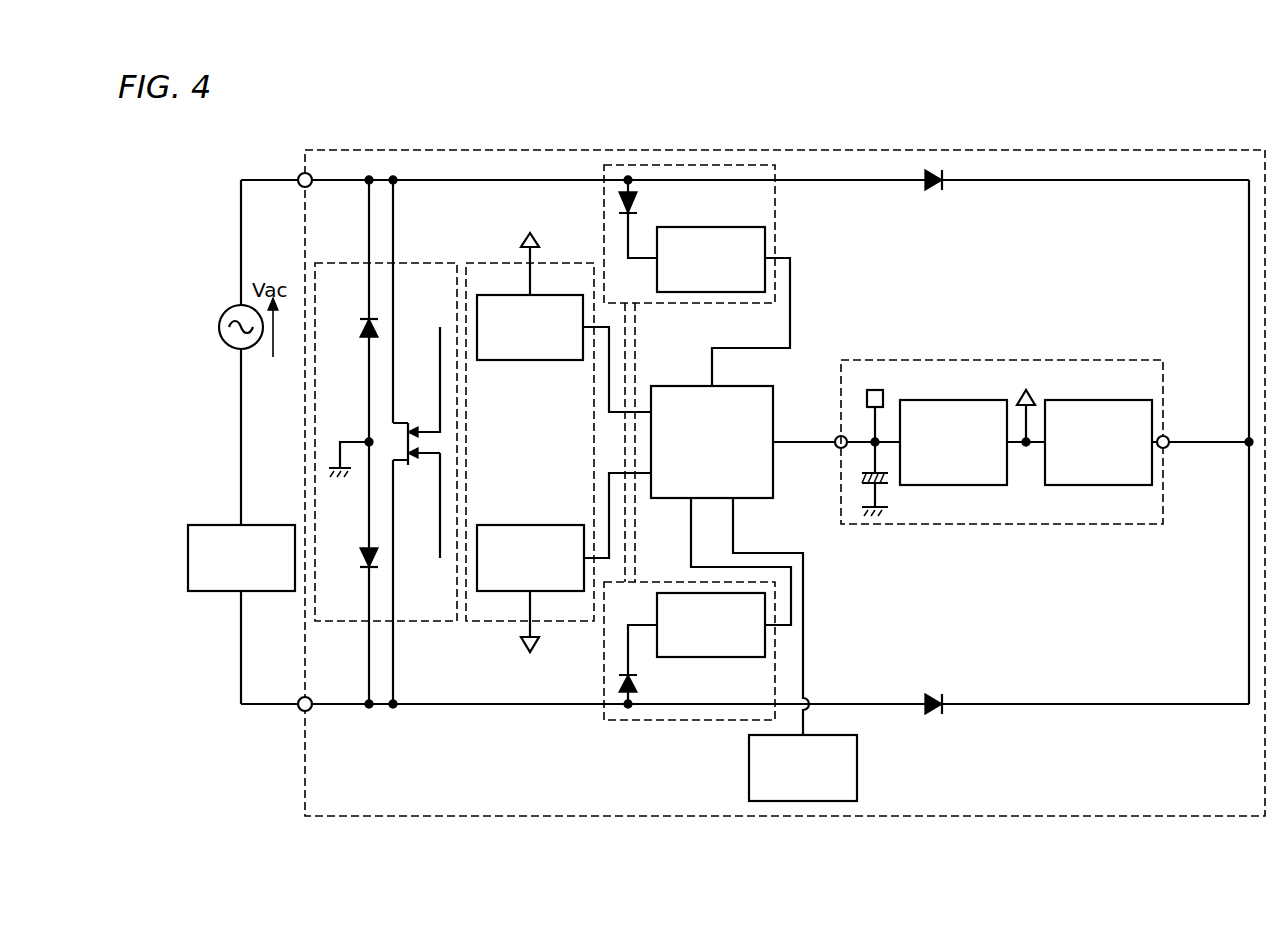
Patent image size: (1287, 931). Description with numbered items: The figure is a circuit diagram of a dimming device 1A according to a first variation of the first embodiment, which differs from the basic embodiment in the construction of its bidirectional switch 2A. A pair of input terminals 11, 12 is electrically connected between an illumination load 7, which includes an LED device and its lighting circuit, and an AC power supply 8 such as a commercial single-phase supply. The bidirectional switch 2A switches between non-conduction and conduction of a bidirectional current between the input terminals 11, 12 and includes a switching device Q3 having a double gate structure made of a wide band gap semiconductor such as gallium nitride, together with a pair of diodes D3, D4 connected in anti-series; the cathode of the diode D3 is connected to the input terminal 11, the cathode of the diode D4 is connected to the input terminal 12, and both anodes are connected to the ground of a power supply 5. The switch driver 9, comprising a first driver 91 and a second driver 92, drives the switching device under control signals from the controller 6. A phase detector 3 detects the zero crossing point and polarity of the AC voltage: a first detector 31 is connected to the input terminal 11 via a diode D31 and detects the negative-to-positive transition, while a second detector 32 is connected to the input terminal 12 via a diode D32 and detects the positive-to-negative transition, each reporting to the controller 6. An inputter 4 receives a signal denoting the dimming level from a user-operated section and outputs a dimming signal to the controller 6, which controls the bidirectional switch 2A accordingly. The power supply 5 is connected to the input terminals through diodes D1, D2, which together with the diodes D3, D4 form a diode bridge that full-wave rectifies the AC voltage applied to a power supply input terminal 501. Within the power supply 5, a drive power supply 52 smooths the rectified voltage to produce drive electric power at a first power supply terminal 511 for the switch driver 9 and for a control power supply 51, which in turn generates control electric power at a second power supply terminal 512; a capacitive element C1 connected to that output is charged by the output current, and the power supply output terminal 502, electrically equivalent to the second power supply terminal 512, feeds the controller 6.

The dimming device 1A is at (1232, 146).
The input terminal 11 is at (299, 176).
The input terminal 12 is at (299, 711).
The bidirectional switch 2A is at (340, 263).
The phase detector 3 is at (776, 210).
The first detector 31 is at (728, 227).
The second detector 32 is at (727, 661).
The inputter 4 is at (857, 768).
The power supply 5 is at (1017, 360).
The control power supply 51 is at (954, 485).
The drive power supply 52 is at (1100, 485).
The power supply input terminal 501 is at (1170, 436).
The power supply output terminal 502 is at (835, 437).
The first power supply terminal 511 is at (1034, 396).
The second power supply terminal 512 is at (884, 395).
The controller 6 is at (679, 386).
The load 7 is at (211, 525).
The AC power supply 8 is at (232, 308).
The switch driver 9 is at (497, 262).
The first driver 91 is at (506, 361).
The second driver 92 is at (504, 524).
The switching device Q3 is at (384, 442).
The diode D1 is at (934, 194).
The diode D2 is at (934, 694).
The diode D3 is at (353, 328).
The diode D4 is at (353, 558).
The diode D31 is at (651, 217).
The diode D32 is at (651, 666).
The capacitive element C1 is at (869, 477).